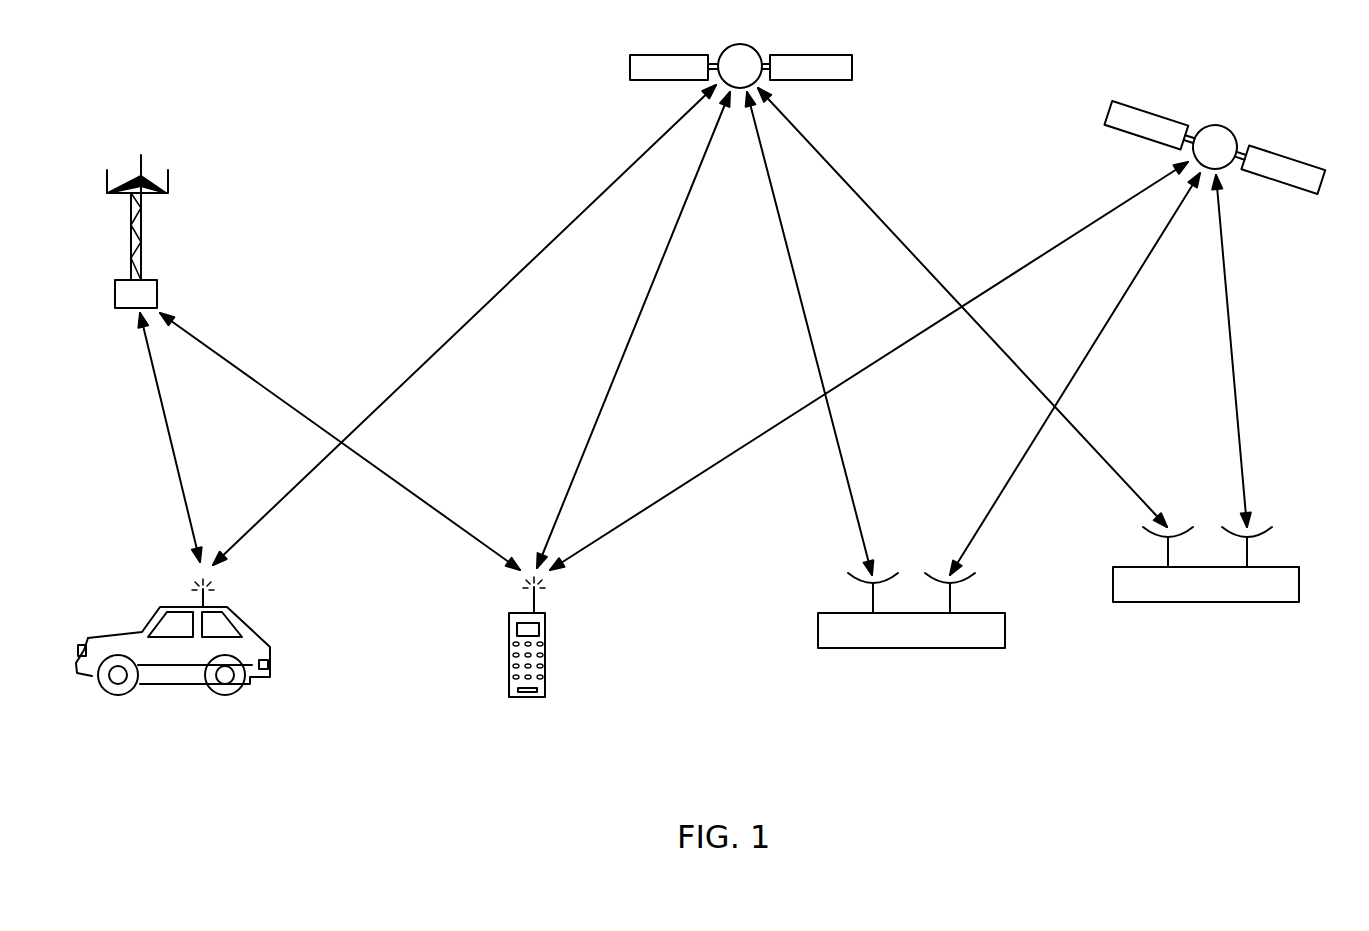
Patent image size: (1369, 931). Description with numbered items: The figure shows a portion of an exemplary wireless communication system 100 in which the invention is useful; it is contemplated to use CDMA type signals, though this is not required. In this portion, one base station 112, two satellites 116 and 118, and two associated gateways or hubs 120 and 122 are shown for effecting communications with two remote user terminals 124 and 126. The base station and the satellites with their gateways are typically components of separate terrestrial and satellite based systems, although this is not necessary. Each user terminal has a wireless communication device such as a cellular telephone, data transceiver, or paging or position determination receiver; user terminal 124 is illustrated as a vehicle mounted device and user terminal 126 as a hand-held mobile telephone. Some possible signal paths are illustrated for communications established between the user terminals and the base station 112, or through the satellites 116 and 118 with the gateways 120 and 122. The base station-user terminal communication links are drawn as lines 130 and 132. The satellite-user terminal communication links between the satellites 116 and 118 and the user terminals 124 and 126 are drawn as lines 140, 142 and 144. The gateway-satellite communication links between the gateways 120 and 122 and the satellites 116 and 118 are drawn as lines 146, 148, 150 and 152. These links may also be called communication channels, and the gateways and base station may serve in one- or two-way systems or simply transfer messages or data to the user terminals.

The communication system 100 is at (430, 188).
The base station 112 is at (157, 293).
The satellite 116 is at (776, 55).
The satellite 118 is at (1282, 157).
The gateway 120 is at (818, 632).
The gateway 122 is at (1299, 587).
The user terminal 124 is at (228, 607).
The user terminal 126 is at (545, 686).
The base station-user terminal communication link 130 is at (160, 408).
The base station-user terminal communication link 132 is at (242, 372).
The satellite-user terminal communication link 140 is at (473, 317).
The satellite-user terminal communication link 142 is at (647, 293).
The satellite-user terminal communication link 144 is at (752, 442).
The gateway-satellite communication link 146 is at (793, 283).
The gateway-satellite communication link 148 is at (870, 202).
The gateway-satellite communication link 150 is at (1118, 303).
The gateway-satellite communication link 152 is at (1228, 312).